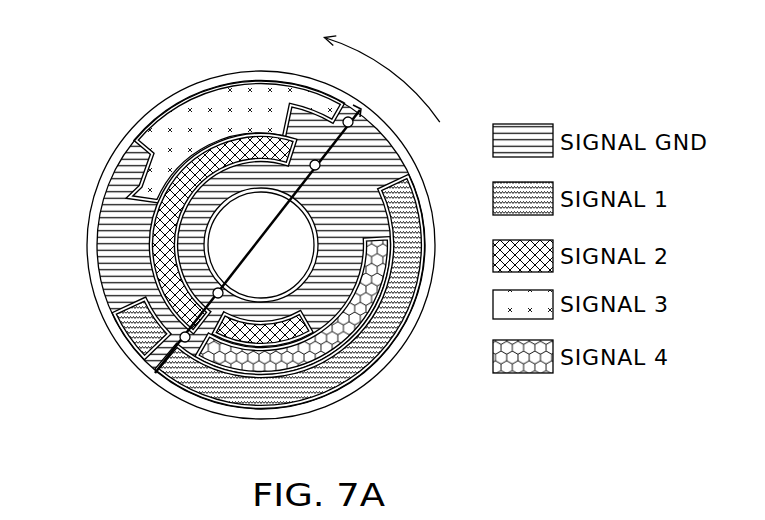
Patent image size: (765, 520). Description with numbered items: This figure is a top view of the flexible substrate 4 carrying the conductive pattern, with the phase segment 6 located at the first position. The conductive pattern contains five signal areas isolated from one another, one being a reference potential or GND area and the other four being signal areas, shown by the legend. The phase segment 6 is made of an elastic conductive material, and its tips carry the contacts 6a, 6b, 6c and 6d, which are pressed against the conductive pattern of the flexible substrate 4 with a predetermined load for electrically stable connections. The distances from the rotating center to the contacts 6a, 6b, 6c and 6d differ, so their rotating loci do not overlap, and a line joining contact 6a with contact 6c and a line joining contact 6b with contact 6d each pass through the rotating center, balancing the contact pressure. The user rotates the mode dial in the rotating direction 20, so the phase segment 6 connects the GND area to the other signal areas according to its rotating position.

The flexible substrate 4 is at (485, 44).
The phase segment 6 is at (268, 228).
The contact 6a is at (351, 130).
The contact 6b is at (183, 336).
The contact 6c is at (320, 170).
The contact 6d is at (214, 290).
The rotating direction 20 is at (390, 68).